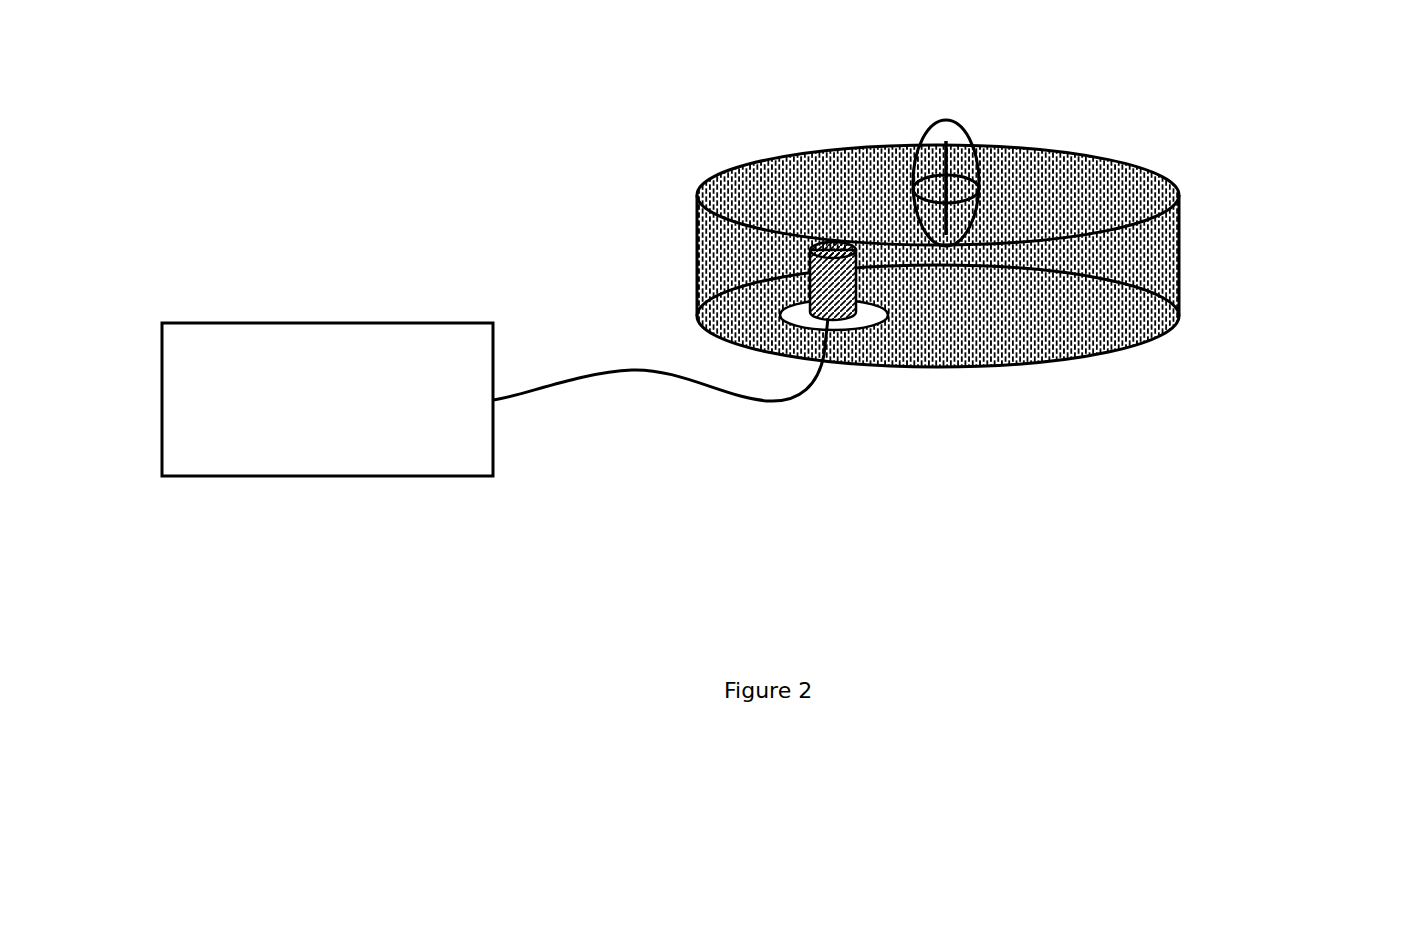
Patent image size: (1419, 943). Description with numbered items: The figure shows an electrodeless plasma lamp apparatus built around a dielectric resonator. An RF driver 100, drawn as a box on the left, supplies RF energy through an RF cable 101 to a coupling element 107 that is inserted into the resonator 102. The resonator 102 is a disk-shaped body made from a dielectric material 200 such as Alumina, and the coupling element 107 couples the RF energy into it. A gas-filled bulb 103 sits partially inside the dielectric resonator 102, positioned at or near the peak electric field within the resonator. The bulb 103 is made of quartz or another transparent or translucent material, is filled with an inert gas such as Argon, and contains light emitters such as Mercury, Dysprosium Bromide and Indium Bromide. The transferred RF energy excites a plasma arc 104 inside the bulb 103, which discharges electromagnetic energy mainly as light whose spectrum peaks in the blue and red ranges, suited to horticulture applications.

The RF driver 100 is at (318, 321).
The RF cable 101 is at (715, 401).
The resonator 102 is at (1184, 213).
The gas-filled bulb 103 is at (926, 130).
The plasma arc 104 is at (955, 154).
The coupling element 107 is at (806, 269).
The dielectric material 200 is at (1078, 302).